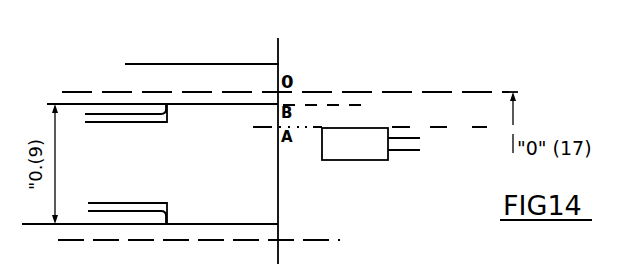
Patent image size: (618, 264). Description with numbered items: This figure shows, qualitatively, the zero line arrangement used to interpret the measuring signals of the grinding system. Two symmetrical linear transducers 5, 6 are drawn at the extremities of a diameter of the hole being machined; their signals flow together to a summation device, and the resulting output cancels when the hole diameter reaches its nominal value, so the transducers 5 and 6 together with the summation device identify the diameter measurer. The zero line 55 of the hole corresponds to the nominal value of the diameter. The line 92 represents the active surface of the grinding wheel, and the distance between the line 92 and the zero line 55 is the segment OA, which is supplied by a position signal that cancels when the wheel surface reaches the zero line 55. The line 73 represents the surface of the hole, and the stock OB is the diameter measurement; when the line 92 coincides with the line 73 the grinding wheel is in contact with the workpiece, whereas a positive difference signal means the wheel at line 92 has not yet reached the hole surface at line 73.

The linear transducer 5 is at (126, 129).
The linear transducer 6 is at (127, 201).
The zero line 55 is at (384, 92).
The line of the hole surface 73 is at (336, 104).
The line of the active surface of the grinding wheel 92 is at (459, 126).